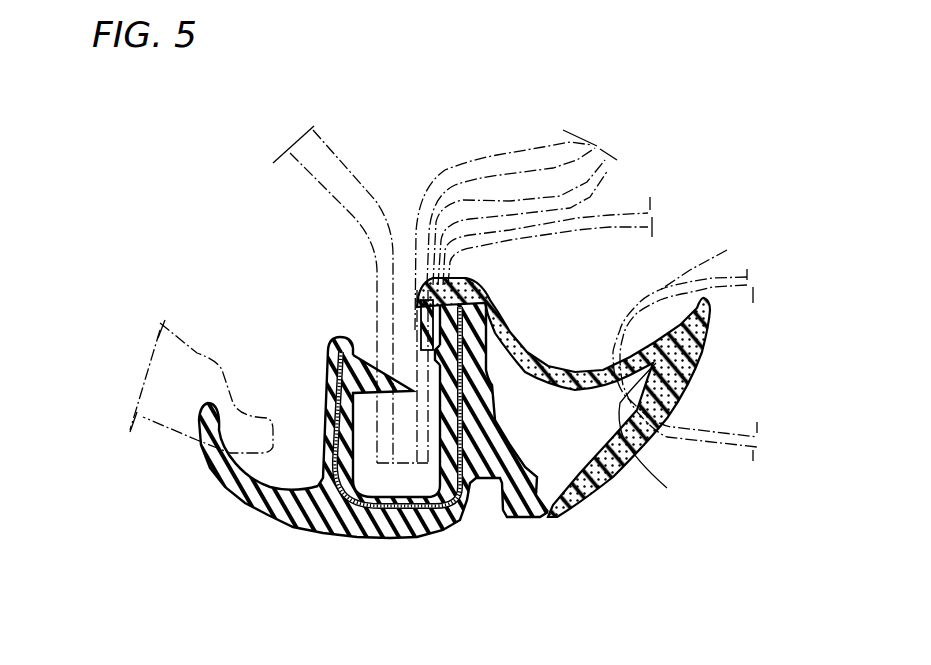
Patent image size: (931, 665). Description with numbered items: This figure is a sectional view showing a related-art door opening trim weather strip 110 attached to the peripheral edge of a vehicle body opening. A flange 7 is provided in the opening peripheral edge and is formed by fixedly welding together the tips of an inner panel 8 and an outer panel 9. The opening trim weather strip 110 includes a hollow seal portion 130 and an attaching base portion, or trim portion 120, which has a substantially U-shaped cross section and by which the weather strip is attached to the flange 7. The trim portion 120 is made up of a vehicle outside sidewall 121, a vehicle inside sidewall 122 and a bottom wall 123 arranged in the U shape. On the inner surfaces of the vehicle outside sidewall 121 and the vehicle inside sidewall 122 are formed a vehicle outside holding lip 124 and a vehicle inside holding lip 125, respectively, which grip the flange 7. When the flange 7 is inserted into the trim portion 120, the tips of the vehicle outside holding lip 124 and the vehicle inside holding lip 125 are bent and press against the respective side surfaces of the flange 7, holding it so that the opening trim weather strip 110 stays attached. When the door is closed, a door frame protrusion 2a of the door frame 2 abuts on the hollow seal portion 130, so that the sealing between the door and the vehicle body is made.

The door frame 2 is at (727, 250).
The door frame protrusion 2a is at (667, 488).
The flange 7 is at (430, 335).
The inner panel 8 is at (353, 187).
The outer panel 9 is at (613, 213).
The opening trim weather strip 110 is at (494, 422).
The attaching base portion (trim portion) 120 is at (357, 537).
The vehicle outside sidewall 121 is at (480, 372).
The vehicle inside sidewall 122 is at (327, 410).
The bottom wall 123 is at (400, 527).
The vehicle outside holding lip 124 is at (438, 352).
The vehicle inside holding lip 125 is at (413, 388).
The hollow seal portion 130 is at (697, 373).